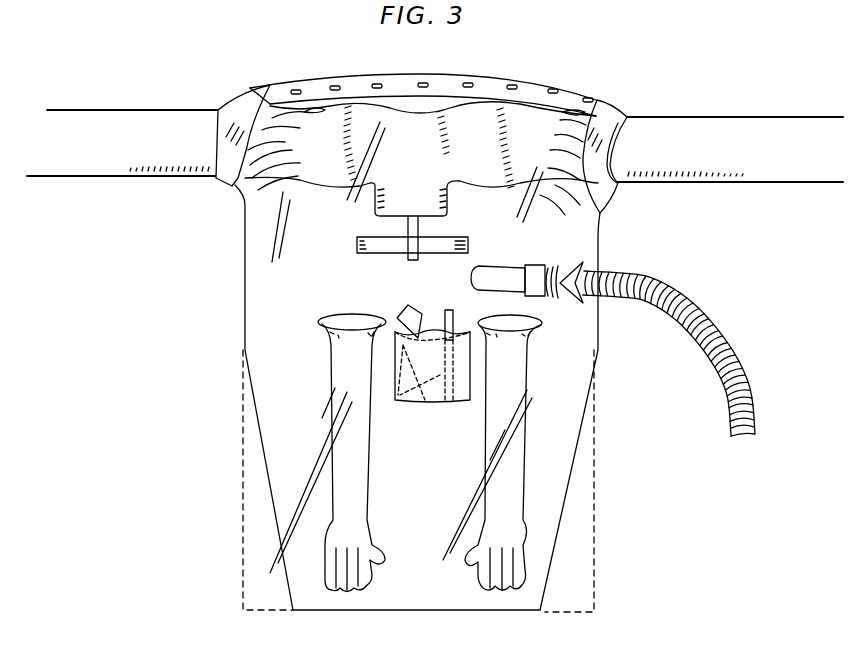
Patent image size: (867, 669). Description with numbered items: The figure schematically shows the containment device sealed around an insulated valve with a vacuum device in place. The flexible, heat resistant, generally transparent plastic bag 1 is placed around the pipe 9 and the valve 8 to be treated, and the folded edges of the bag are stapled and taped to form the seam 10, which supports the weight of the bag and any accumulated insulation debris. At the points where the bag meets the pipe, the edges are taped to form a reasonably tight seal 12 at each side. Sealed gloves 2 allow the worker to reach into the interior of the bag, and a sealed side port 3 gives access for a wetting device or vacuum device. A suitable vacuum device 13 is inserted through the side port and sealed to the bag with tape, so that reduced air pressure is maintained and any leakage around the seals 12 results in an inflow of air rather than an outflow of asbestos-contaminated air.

The plastic bag 1 is at (583, 508).
The sealed gloves 2 is at (347, 430).
The sealed side port 3 is at (600, 267).
The valve 8 is at (423, 110).
The pipe 9 is at (752, 135).
The seam 10 is at (500, 82).
The seal 12 is at (248, 110).
The vacuum device 13 is at (727, 335).